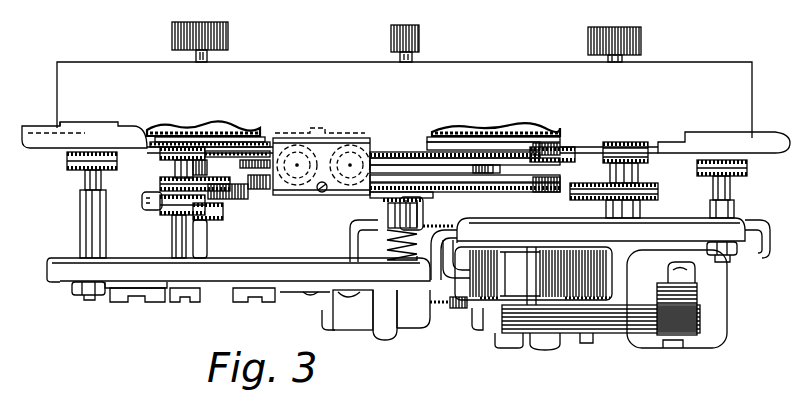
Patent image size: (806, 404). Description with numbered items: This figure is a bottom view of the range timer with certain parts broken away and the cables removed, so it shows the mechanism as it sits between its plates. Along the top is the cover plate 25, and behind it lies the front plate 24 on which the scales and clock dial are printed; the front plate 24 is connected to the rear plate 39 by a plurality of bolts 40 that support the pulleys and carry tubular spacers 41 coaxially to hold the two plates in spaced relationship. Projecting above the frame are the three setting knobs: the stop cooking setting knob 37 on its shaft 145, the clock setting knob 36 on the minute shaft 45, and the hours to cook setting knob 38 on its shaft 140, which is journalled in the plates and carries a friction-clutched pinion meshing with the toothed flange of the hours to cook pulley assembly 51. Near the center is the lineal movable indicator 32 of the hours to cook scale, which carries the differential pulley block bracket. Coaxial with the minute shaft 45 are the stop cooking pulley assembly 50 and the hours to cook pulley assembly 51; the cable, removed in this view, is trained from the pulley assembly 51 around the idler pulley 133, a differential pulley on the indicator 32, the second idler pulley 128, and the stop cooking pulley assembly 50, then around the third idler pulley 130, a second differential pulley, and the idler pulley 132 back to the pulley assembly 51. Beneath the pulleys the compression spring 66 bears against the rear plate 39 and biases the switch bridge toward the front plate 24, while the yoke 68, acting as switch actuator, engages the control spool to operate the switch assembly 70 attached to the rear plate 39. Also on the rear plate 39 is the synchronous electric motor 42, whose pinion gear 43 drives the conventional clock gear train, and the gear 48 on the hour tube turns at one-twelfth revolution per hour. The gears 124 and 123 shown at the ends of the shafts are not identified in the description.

The cover plate 25 is at (743, 72).
The front plate 24 is at (768, 138).
The stop cooking setting knob 37 is at (228, 27).
The shaft 145 is at (212, 53).
The setting knob 36 is at (419, 35).
The shaft 45 is at (413, 58).
The hours to cook setting knob 38 is at (641, 35).
The shaft 140 is at (628, 58).
The tubular spacers 41 is at (82, 203).
The gear 124 is at (66, 158).
The gear 123 is at (748, 168).
The second idler pulley 128 is at (165, 163).
The idler pulley 133 is at (172, 208).
The lineal movable indicator 32 is at (345, 133).
The stop cooking pulley assembly 50 is at (577, 135).
The hours to cook pulley assembly 51 is at (573, 175).
The third idler pulley 130 is at (648, 136).
The idler pulley 132 is at (645, 196).
The yoke 68 is at (346, 236).
The compression spring 66 is at (392, 246).
The switch assembly 70 is at (150, 312).
The rear plate 39 is at (752, 248).
The bolts 40 is at (73, 294).
The synchronous electric motor 42 is at (608, 326).
The pinion gear 43 is at (460, 310).
The gear 48 is at (441, 308).